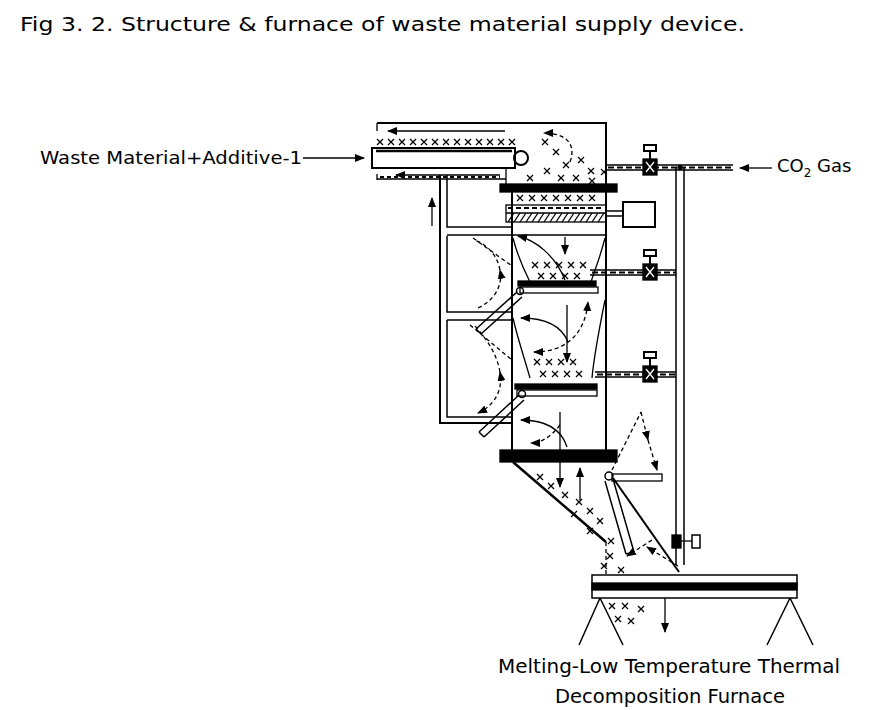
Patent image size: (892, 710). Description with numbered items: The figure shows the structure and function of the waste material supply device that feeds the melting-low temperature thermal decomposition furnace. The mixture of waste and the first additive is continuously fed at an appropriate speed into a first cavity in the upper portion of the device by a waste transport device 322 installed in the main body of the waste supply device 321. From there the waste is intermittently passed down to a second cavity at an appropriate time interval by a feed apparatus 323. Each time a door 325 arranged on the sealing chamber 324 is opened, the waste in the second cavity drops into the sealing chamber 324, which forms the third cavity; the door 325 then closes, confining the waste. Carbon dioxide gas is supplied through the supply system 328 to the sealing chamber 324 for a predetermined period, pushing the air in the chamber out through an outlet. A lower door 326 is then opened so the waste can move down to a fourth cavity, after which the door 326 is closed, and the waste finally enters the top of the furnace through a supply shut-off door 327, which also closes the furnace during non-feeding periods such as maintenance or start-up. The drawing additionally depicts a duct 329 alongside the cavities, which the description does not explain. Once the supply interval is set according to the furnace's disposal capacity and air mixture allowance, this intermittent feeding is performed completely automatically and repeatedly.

The main body of waste supply device 321 is at (612, 104).
The waste transport device 322 is at (467, 150).
The feed apparatus 323 is at (608, 227).
The sealing chamber 324 is at (590, 335).
The door 325 is at (600, 293).
The lower door 326 is at (600, 395).
The supply shut-off door 327 is at (620, 505).
The CO2 gas supply system 328 is at (705, 163).
The gas recirculation duct 329 is at (440, 275).